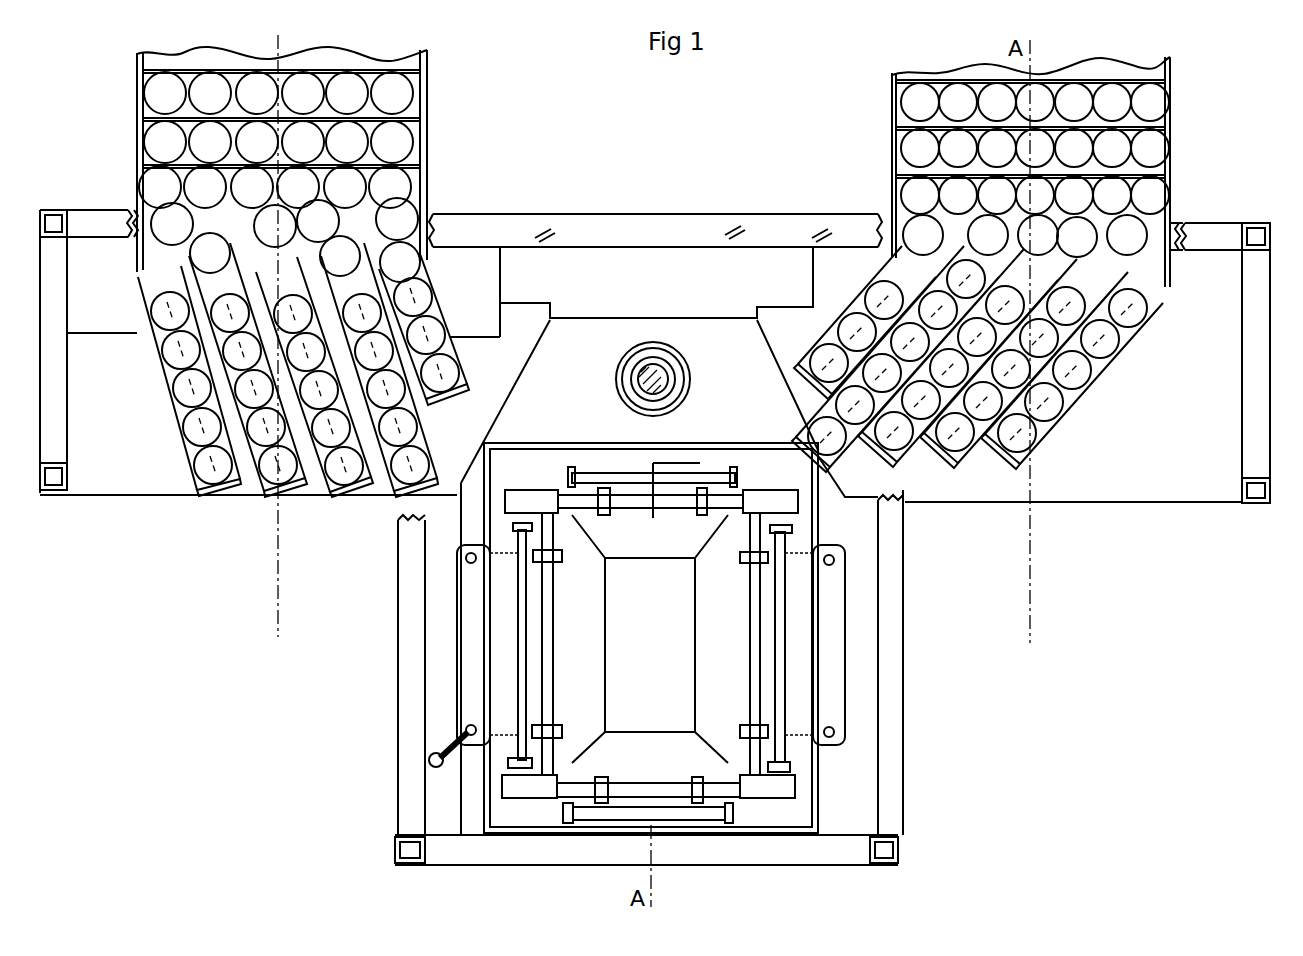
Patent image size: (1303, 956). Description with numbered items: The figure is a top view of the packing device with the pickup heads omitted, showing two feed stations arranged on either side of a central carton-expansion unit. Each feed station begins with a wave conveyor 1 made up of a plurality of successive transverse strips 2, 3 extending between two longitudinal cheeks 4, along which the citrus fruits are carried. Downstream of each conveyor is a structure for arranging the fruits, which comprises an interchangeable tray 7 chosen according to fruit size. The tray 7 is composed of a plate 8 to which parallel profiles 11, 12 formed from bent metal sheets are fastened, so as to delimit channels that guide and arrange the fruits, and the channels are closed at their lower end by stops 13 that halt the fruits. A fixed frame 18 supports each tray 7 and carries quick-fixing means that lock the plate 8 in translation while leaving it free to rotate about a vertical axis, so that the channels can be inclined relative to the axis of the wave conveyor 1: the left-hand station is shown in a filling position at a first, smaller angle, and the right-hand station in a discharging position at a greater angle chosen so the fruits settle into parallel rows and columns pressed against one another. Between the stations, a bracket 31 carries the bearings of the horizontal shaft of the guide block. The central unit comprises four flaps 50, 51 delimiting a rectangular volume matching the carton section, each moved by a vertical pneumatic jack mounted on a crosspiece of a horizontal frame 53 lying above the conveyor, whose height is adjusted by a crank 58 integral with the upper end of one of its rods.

The wave conveyor 1 is at (434, 97).
The transverse strip 2 is at (408, 156).
The transverse strip 3 is at (150, 108).
The longitudinal cheek 4 is at (430, 125).
The tray 7 is at (184, 453).
The plate 8 is at (255, 494).
The profile 11 is at (320, 497).
The profile 12 is at (165, 350).
The stop 13 is at (220, 498).
The fixed frame 18 is at (87, 460).
The bracket 31 is at (653, 376).
The flap 50 is at (573, 632).
The flap 51 is at (710, 647).
The horizontal frame 53 is at (513, 817).
The crank 58 is at (447, 745).